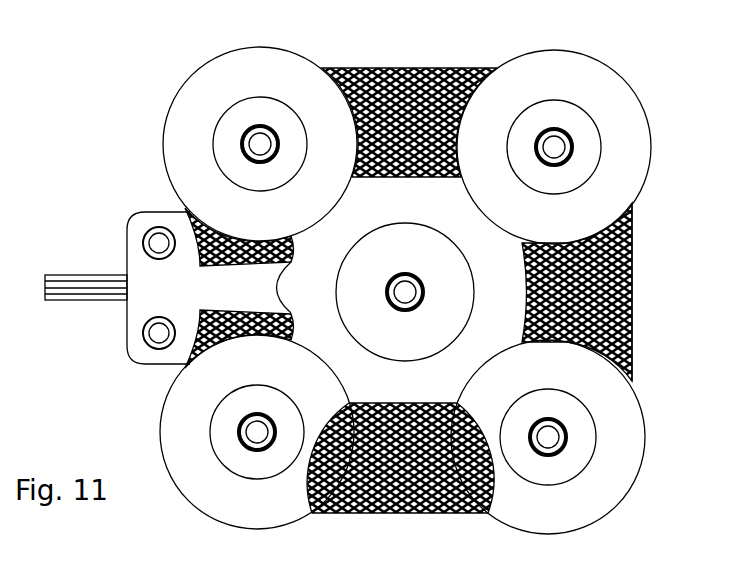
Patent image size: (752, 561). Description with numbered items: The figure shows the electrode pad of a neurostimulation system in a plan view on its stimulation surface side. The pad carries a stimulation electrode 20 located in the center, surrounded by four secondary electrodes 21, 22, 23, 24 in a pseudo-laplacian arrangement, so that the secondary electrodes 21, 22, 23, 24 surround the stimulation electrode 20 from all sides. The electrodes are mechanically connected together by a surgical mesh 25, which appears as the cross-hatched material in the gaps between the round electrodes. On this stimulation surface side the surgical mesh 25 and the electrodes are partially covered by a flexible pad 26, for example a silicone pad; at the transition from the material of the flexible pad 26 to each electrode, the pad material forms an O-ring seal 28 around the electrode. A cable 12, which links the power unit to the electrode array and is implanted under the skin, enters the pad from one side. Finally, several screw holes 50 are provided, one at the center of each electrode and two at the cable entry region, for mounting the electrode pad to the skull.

The cable 12 is at (62, 275).
The stimulation electrode 20 is at (438, 260).
The secondary electrode 21 is at (230, 140).
The secondary electrode 22 is at (583, 148).
The secondary electrode 23 is at (227, 432).
The secondary electrode 24 is at (578, 450).
The surgical mesh 25 is at (405, 68).
The flexible pad 26 is at (500, 314).
The O-ring seal 28 is at (515, 178).
The screw holes 50 is at (261, 143).